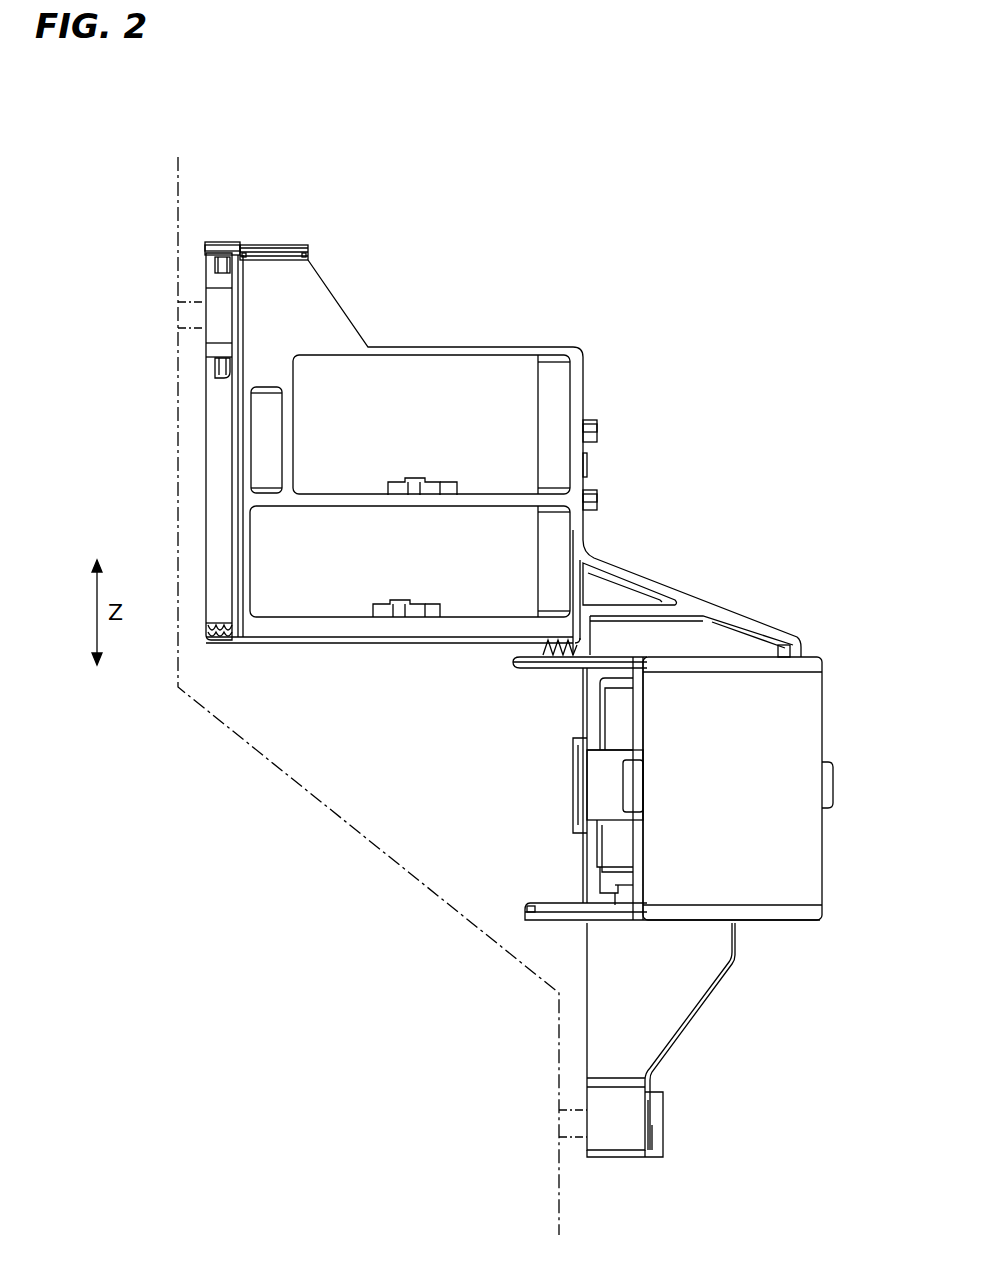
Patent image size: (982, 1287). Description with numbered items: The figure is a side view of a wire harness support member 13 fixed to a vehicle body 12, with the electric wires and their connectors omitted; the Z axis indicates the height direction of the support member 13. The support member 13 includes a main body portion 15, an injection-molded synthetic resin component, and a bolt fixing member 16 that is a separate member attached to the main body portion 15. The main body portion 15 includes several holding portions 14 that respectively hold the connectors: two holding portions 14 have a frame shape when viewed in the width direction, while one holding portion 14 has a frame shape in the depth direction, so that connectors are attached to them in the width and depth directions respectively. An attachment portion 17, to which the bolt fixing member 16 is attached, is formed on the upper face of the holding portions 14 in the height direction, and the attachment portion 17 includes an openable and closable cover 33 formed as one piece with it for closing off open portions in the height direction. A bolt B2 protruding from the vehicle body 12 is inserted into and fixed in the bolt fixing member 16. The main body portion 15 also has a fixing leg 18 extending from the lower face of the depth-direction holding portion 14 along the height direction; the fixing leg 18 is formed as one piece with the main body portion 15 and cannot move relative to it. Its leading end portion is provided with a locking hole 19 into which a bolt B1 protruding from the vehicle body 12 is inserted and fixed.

The vehicle body 12 is at (178, 193).
The wire harness support member 13 is at (705, 402).
The holding portion 14 is at (470, 352).
The main body portion 15 is at (585, 375).
The bolt fixing member 16 is at (222, 317).
The attachment portion 17 is at (263, 268).
The fixing leg 18 is at (677, 1010).
The locking hole 19 is at (663, 1122).
The cover 33 is at (290, 237).
The bolt B1 is at (573, 1140).
The bolt B2 is at (190, 300).